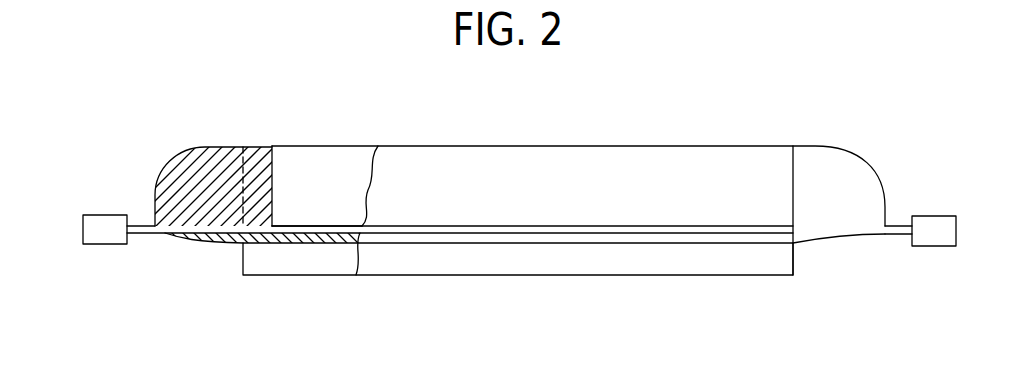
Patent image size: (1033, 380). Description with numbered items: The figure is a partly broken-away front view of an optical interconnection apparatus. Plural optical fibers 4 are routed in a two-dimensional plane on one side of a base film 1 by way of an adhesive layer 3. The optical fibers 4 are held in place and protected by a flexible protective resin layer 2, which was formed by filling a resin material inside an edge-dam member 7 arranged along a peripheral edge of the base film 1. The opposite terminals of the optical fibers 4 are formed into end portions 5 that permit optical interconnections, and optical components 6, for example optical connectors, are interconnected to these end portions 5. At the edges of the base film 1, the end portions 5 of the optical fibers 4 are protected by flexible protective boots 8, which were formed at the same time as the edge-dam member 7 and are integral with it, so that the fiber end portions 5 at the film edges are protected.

The base film 1 is at (285, 265).
The flexible protective resin layer 2 is at (305, 158).
The adhesive layer 3 is at (347, 238).
The optical fibers 4 is at (333, 225).
The end portions 5 is at (143, 234).
The optical components 6 is at (110, 227).
The edge-dam member 7 is at (264, 157).
The flexible protective boots 8 is at (218, 152).